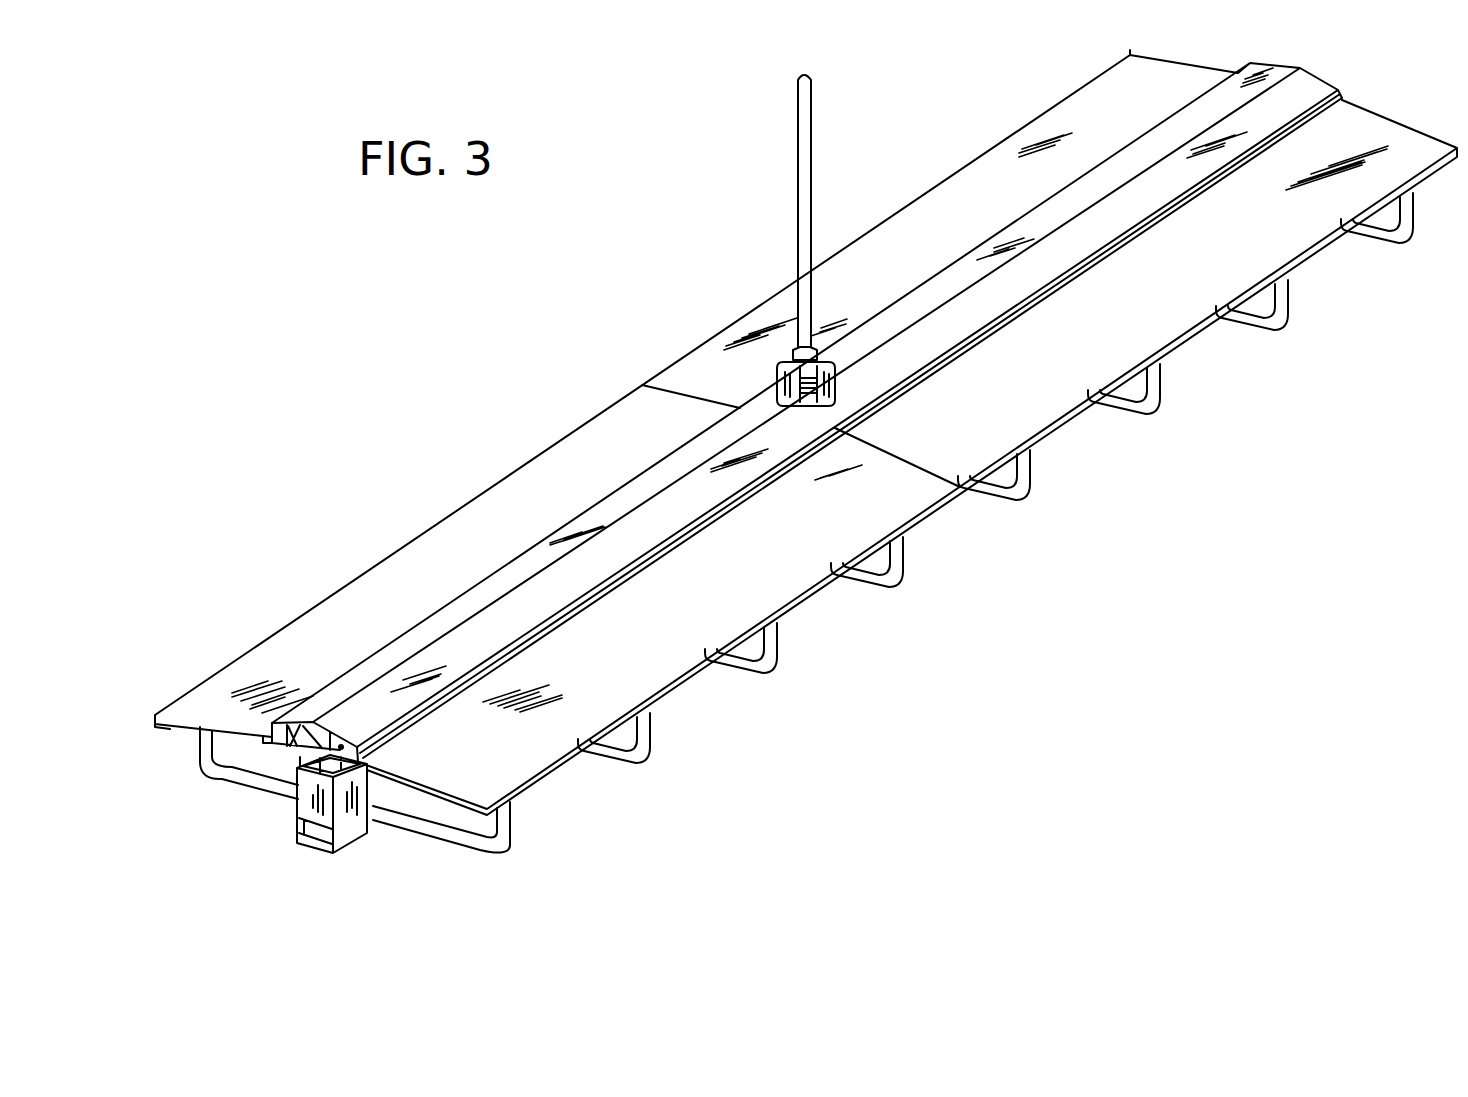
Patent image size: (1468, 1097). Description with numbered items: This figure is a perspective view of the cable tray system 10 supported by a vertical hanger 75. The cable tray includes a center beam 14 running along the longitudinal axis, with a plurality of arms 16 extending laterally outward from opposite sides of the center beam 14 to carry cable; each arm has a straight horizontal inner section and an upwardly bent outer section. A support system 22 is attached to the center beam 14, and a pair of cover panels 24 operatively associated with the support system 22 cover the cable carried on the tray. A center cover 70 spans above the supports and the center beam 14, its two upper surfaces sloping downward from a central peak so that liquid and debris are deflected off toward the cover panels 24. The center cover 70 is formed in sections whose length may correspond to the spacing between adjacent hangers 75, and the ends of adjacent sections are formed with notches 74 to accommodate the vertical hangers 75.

The cable tray system 10 is at (607, 310).
The center beam 14 is at (346, 852).
The arms 16 is at (1387, 252).
The support system 22 is at (276, 738).
The cover panels 24 is at (1200, 35).
The center cover 70 is at (1270, 68).
The notches 74 is at (796, 410).
The vertical hangers 75 is at (797, 153).